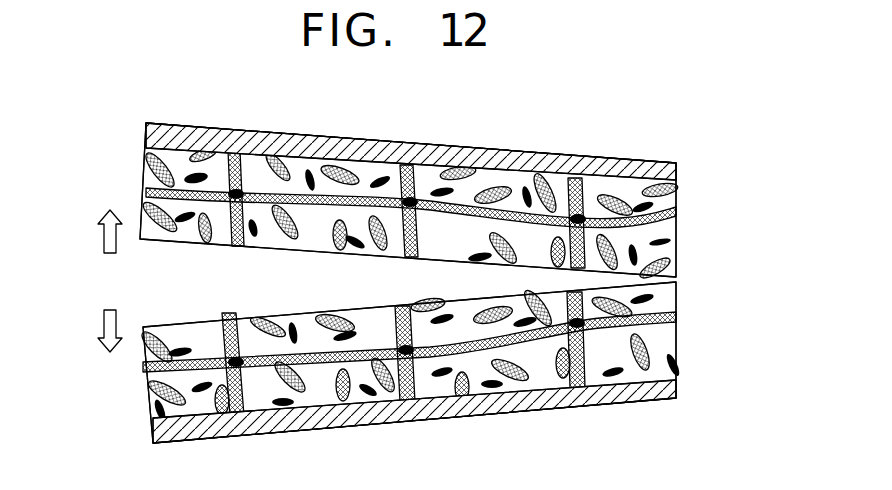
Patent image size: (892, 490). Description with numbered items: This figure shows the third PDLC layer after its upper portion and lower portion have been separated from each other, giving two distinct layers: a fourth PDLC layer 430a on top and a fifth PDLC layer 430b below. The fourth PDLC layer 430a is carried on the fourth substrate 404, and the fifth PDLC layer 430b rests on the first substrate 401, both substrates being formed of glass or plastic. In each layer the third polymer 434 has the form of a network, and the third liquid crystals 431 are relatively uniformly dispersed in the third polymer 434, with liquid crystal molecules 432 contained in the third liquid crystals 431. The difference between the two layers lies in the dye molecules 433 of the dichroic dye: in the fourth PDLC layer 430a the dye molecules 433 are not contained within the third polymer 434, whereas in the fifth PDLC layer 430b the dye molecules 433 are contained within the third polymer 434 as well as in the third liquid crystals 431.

The first substrate 401 is at (678, 388).
The fourth substrate 404 is at (676, 172).
The fourth PDLC layer 430a is at (142, 142).
The fifth PDLC layer 430b is at (142, 328).
The third liquid crystals 431 is at (672, 237).
The liquid crystal molecules 432 is at (676, 337).
The dye molecules 433 is at (676, 206).
The third polymer 434 is at (676, 310).